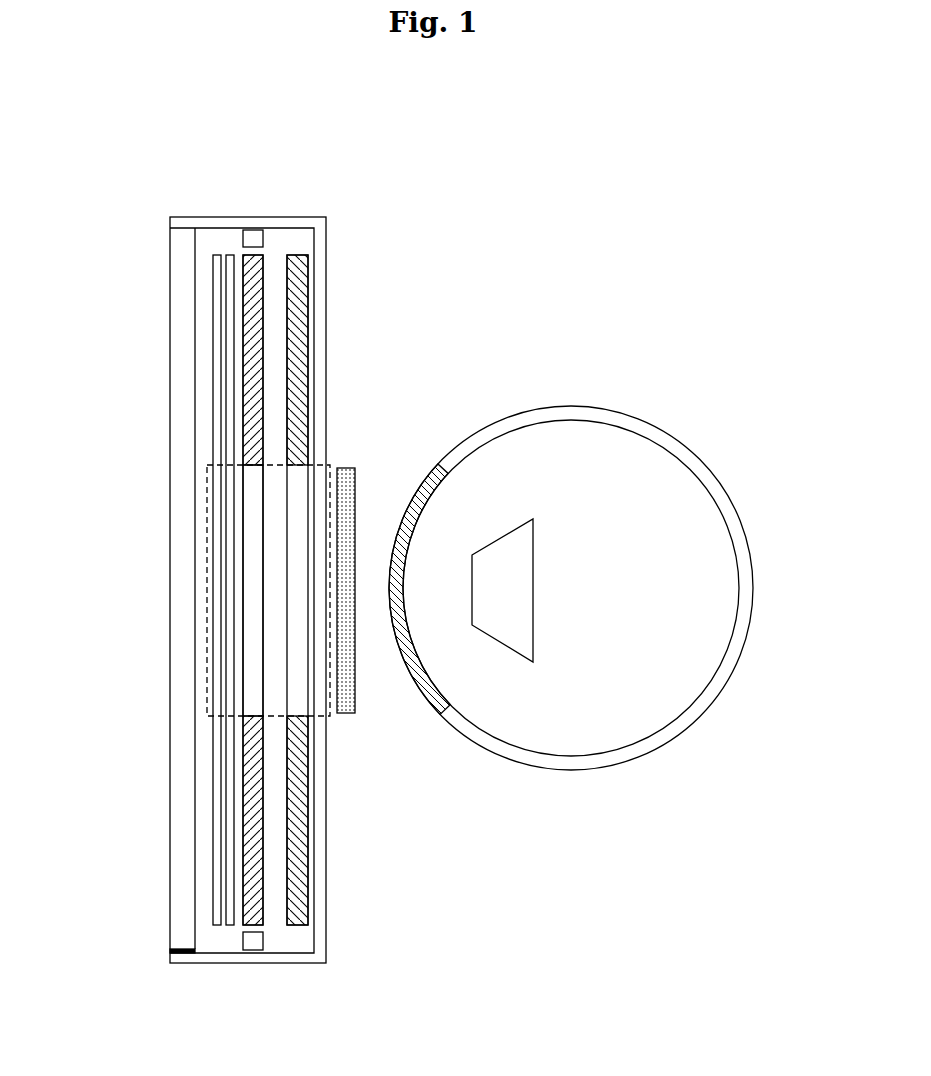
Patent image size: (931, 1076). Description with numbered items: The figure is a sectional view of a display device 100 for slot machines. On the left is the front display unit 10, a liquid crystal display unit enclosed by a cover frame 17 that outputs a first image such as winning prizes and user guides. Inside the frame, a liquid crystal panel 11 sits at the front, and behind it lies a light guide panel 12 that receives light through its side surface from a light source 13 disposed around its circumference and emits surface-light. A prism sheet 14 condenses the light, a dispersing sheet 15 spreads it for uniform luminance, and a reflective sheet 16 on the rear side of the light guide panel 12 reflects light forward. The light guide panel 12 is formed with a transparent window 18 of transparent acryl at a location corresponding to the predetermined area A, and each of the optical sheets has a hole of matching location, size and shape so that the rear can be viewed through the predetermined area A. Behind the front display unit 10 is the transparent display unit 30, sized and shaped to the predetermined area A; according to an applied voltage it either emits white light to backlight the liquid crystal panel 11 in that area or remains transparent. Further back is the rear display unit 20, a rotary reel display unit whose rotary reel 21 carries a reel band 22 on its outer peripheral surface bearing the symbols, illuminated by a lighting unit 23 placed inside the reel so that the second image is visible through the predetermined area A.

The display device 100 is at (48, 115).
The front display unit 10 is at (338, 986).
The liquid crystal panel 11 is at (180, 272).
The light guide panel 12 is at (247, 410).
The light source 13 is at (250, 228).
The prism sheet 14 is at (215, 338).
The dispersing sheet 15 is at (228, 377).
The reflective sheet 16 is at (305, 300).
The cover frame 17 is at (185, 218).
The transparent window 18 is at (254, 588).
The predetermined area A is at (210, 632).
The transparent display unit 30 is at (362, 731).
The rear display unit 20 is at (684, 773).
The rotary reel 21 is at (660, 438).
The reel band 22 is at (441, 483).
The lighting unit 23 is at (533, 590).